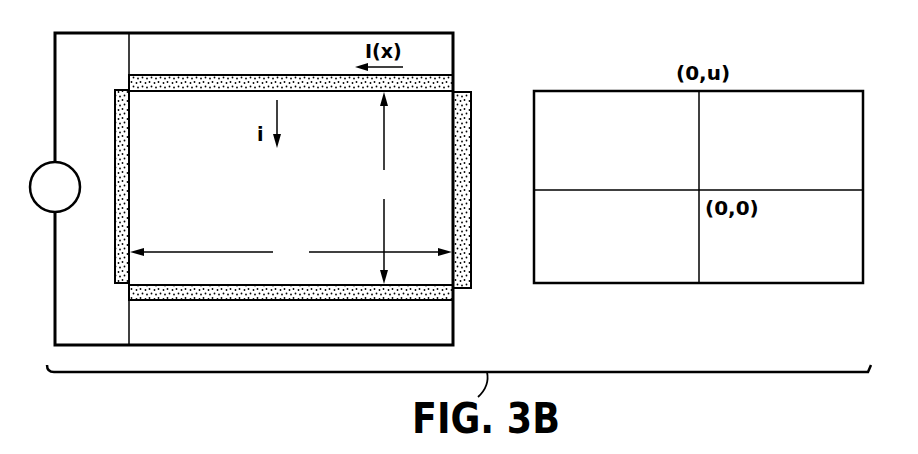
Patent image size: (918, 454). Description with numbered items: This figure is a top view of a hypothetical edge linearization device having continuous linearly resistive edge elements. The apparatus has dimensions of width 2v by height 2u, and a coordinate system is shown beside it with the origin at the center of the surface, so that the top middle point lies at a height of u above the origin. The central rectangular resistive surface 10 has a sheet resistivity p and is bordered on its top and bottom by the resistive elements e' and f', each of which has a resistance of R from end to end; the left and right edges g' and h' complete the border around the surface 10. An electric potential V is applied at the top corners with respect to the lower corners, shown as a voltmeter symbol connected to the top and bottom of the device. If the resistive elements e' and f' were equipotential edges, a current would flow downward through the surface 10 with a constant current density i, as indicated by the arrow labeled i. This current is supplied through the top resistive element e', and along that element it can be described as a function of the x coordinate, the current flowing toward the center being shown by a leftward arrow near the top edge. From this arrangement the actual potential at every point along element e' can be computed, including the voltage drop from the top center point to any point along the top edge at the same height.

The resistive surface 10 is at (312, 199).
The height dimension 2u is at (385, 188).
The width dimension 2v is at (291, 253).
The resistance R is at (189, 63).
The electric potential V is at (55, 187).
The resistive element e' e is at (291, 70).
The resistive element f' f is at (291, 310).
The edge g' g is at (110, 186).
The edge h' h is at (475, 190).